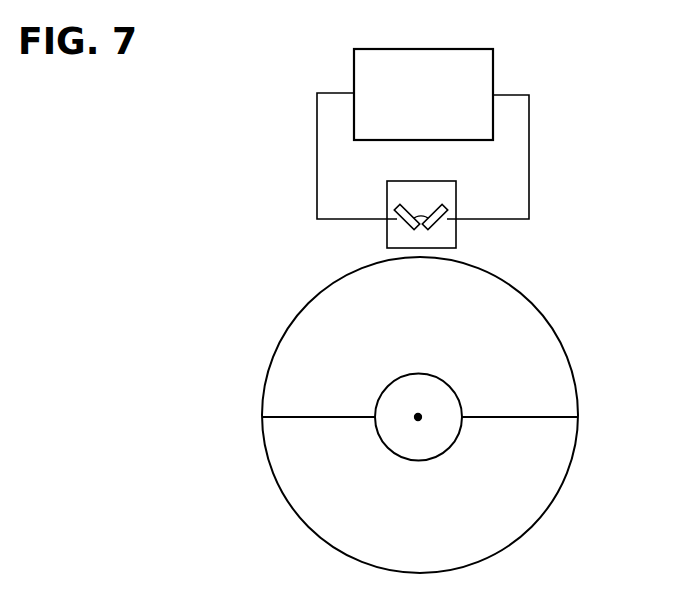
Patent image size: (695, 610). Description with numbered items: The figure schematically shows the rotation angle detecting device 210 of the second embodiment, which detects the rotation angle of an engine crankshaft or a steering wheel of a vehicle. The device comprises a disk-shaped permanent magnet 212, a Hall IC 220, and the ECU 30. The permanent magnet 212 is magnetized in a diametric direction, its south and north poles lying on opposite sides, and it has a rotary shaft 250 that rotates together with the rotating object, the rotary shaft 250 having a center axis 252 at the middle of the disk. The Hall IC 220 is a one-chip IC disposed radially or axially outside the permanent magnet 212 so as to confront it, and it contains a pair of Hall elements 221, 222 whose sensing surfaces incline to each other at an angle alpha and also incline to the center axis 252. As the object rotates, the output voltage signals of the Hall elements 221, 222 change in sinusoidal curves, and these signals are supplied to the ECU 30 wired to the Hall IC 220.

The ECU 30 is at (427, 48).
The rotation angle detecting device 210 is at (558, 208).
The permanent magnet 212 is at (557, 337).
The Hall IC 220 is at (457, 192).
The Hall element 221 is at (398, 207).
The Hall element 222 is at (445, 207).
The rotary shaft 250 is at (433, 432).
The center axis 252 is at (418, 420).